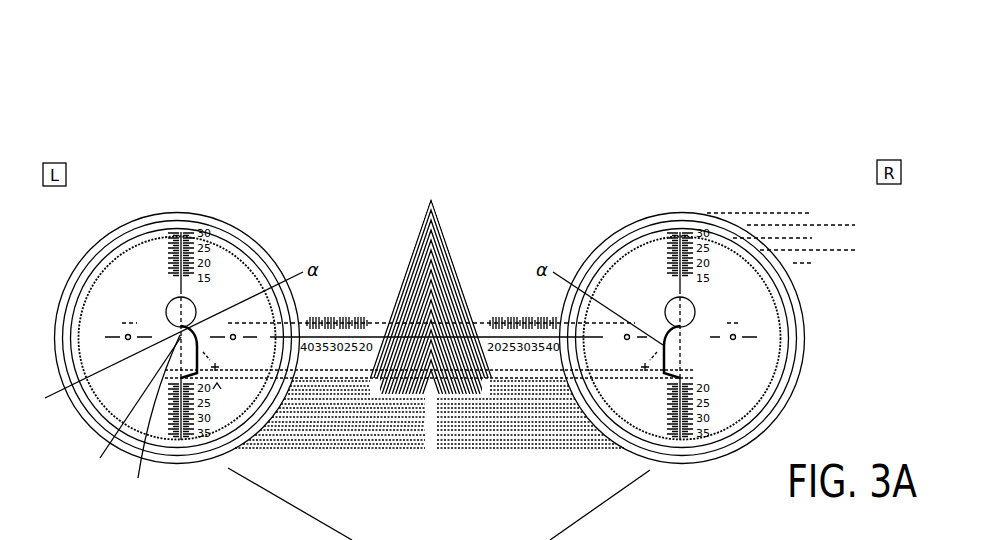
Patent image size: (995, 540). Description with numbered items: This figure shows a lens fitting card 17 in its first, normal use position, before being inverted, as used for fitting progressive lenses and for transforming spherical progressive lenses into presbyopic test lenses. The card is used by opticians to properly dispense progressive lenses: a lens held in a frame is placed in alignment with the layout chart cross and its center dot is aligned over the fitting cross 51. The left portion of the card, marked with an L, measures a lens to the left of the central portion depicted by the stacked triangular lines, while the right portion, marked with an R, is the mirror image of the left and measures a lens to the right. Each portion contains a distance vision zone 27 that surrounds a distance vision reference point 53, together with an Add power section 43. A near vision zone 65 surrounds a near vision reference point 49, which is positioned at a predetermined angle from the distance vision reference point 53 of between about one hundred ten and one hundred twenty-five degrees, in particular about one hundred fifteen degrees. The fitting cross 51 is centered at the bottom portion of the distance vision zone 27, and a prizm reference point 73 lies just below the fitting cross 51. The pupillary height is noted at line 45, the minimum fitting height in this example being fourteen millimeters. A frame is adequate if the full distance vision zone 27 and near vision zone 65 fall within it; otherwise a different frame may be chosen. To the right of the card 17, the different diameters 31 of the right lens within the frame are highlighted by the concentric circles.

The lens fitting card 17 is at (437, 160).
The diameters 31 is at (823, 178).
The distance vision zone 27 is at (168, 306).
The Add power section 43 is at (125, 322).
The distance vision reference point 53 is at (194, 306).
The fitting cross 51 is at (162, 344).
The prizm reference point 73 is at (130, 409).
The near vision reference point 49 is at (152, 418).
The near vision zone 65 is at (217, 384).
The pupillary height line 45 is at (450, 390).